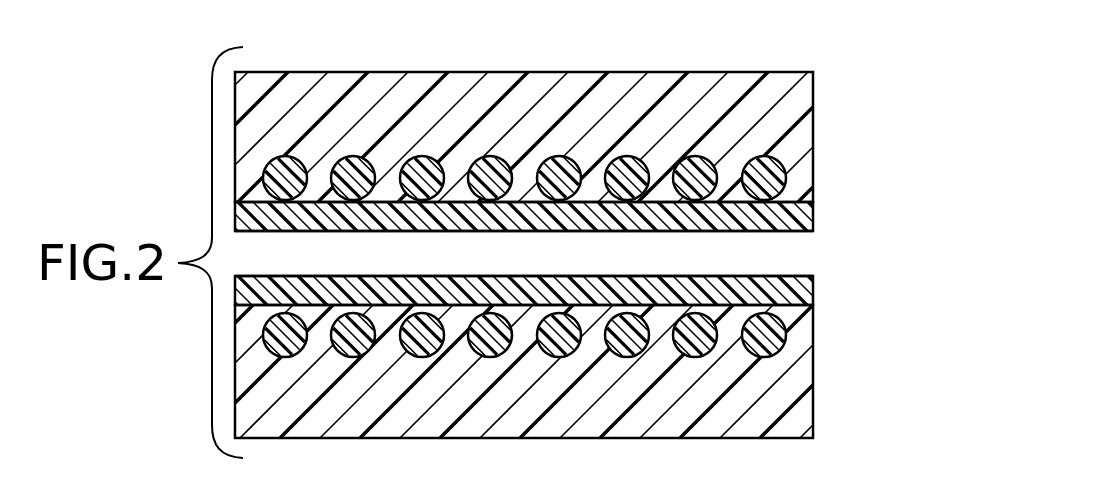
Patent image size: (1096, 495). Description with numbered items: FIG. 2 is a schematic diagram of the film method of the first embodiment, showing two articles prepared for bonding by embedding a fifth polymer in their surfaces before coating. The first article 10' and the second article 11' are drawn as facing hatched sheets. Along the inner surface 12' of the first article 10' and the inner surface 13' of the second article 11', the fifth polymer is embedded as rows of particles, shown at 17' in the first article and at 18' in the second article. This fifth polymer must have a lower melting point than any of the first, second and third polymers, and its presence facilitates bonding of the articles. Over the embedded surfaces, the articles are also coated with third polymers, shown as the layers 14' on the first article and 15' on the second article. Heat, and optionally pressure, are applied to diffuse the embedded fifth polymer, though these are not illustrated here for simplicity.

The first article 10' is at (573, 137).
The second article 11' is at (573, 371).
The surface of first article 12' is at (573, 205).
The surface of second article 13' is at (573, 307).
The third polymer coating on first article 14' is at (573, 240).
The third polymer coating on second article 15' is at (573, 277).
The embedded fifth polymer in first article 17' is at (587, 170).
The embedded fifth polymer in second article 18' is at (587, 346).